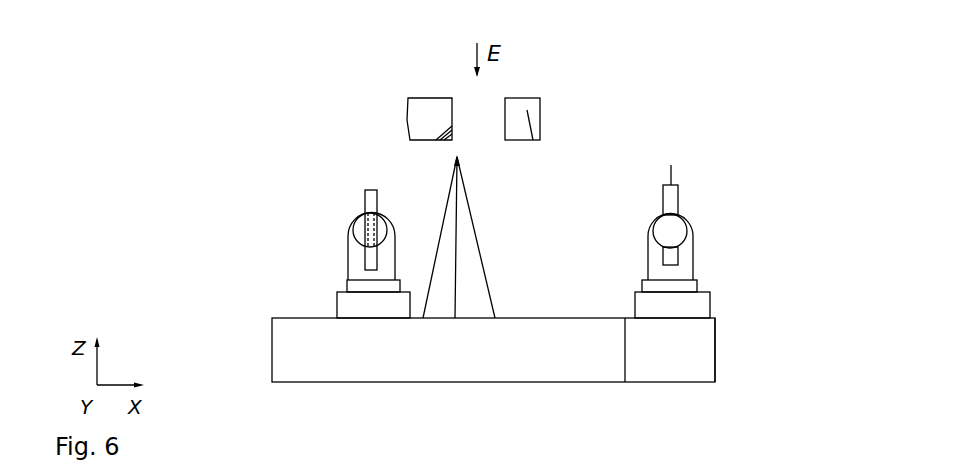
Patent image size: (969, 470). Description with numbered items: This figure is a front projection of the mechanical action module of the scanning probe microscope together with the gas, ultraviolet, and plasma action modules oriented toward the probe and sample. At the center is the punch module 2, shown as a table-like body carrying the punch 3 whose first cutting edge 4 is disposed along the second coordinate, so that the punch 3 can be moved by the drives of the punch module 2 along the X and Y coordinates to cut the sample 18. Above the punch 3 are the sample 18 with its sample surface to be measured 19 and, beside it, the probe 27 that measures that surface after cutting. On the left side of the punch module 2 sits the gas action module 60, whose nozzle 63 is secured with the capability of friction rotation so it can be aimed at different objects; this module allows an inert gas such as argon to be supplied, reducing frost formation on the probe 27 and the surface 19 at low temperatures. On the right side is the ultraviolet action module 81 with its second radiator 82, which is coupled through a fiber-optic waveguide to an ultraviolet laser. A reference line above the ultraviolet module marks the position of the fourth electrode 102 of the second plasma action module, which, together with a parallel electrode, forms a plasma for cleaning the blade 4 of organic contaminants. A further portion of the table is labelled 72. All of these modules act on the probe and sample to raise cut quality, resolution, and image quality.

The punch module 2 is at (270, 340).
The table section 72 is at (717, 335).
The gas action module 60 is at (356, 243).
The nozzle 63 is at (366, 200).
The ultraviolet action module 81 is at (697, 257).
The second radiator 82 is at (679, 212).
The fourth electrode 102 is at (676, 177).
The sample 18 is at (421, 113).
The sample surface to be measured 19 is at (450, 131).
The probe 27 is at (532, 111).
The first cutting edge 4 is at (423, 318).
The punch 3 is at (475, 297).